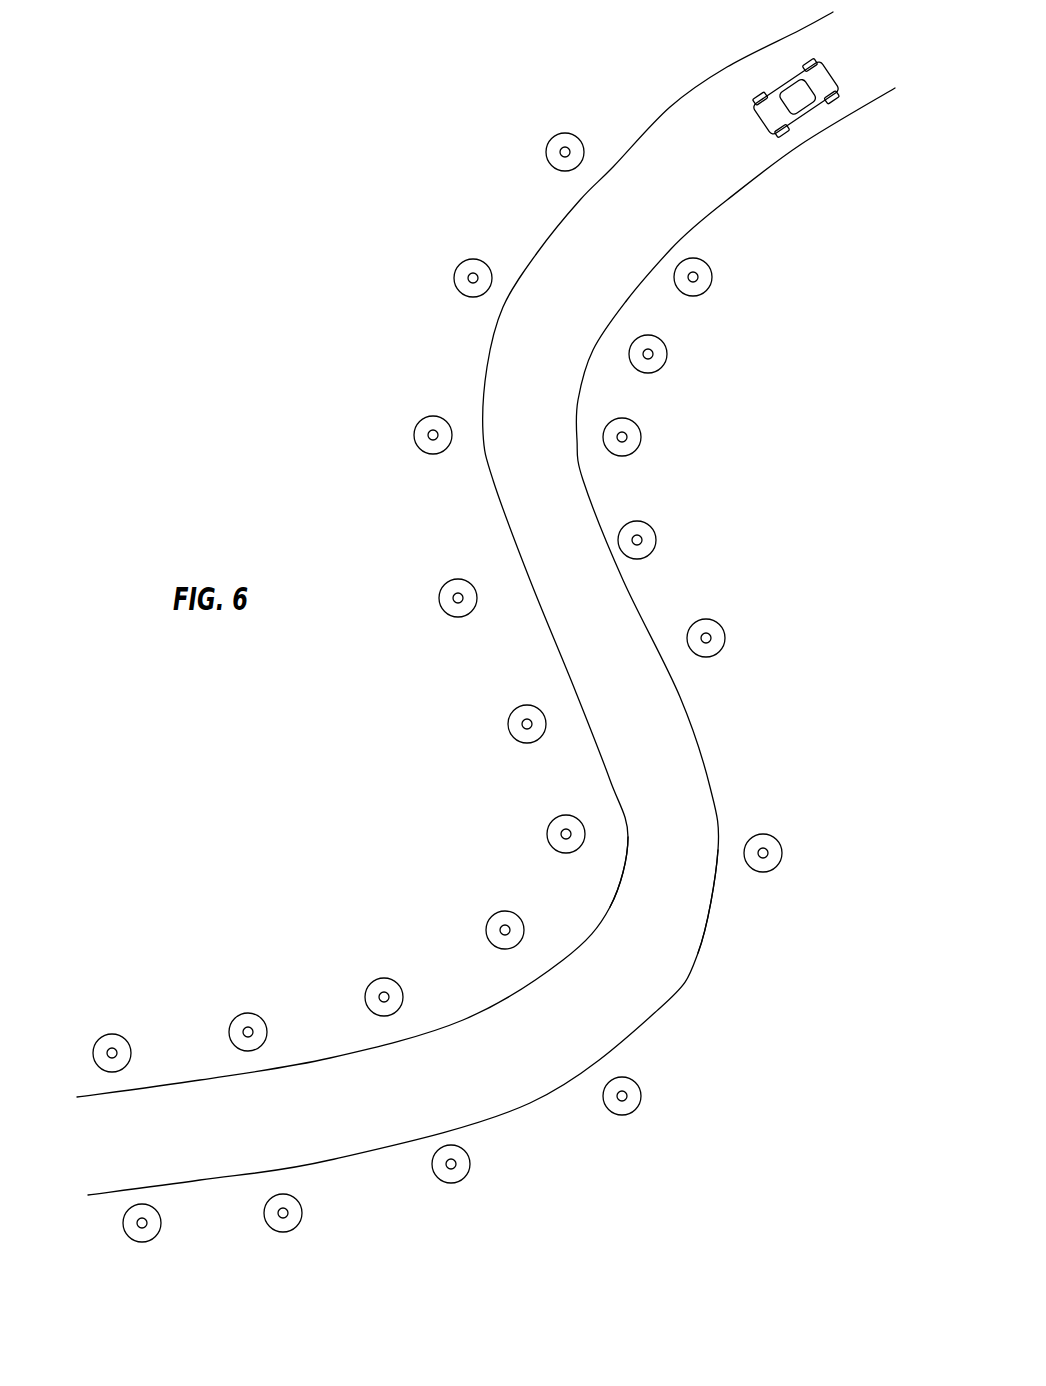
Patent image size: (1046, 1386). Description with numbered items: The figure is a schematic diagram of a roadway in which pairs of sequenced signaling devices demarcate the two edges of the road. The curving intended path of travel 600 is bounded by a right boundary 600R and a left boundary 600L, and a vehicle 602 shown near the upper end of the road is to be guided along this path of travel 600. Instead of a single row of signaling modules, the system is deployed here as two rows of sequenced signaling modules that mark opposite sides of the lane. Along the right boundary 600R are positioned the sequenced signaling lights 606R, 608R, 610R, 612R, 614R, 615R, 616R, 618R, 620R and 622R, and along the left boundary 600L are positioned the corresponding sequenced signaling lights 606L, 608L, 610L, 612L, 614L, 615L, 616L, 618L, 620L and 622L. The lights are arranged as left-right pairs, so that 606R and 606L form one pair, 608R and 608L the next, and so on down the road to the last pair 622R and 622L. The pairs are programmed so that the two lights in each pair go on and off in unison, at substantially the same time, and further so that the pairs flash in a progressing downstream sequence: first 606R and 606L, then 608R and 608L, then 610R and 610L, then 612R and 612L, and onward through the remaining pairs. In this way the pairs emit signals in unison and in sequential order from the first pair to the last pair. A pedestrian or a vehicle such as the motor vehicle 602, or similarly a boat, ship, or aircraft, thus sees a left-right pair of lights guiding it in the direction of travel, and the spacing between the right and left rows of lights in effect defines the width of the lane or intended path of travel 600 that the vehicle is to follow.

The intended path of travel 600 is at (648, 727).
The right boundary 600R is at (608, 907).
The left boundary 600L is at (698, 953).
The vehicle 602 is at (798, 97).
The sequenced signaling light 606R is at (547, 145).
The sequenced signaling light 608R is at (455, 275).
The sequenced signaling light 610R is at (415, 432).
The sequenced signaling light 612R is at (440, 596).
The sequenced signaling light 614R is at (509, 722).
The sequenced signaling light 615R is at (548, 833).
The sequenced signaling light 616R is at (487, 929).
The sequenced signaling light 618R is at (366, 996).
The sequenced signaling light 620R is at (230, 1030).
The sequenced signaling light 622R is at (112, 1034).
The sequenced signaling light 606L is at (712, 277).
The sequenced signaling light 608L is at (667, 354).
The sequenced signaling light 610L is at (641, 437).
The sequenced signaling light 612L is at (656, 540).
The sequenced signaling light 614L is at (725, 640).
The sequenced signaling light 615L is at (782, 855).
The sequenced signaling light 616L is at (641, 1097).
The sequenced signaling light 618L is at (470, 1166).
The sequenced signaling light 620L is at (302, 1215).
The sequenced signaling light 622L is at (161, 1225).